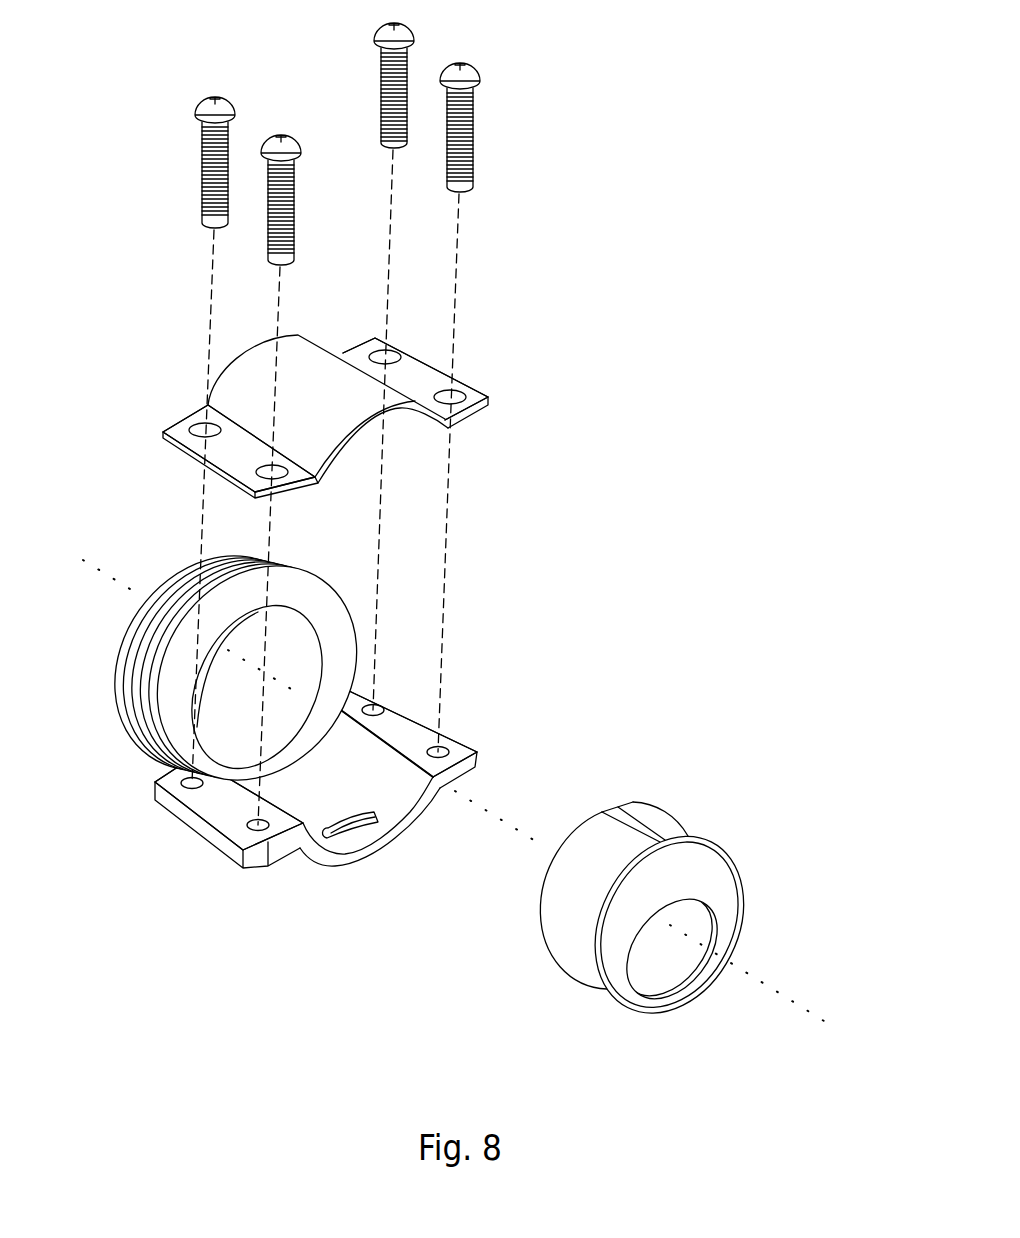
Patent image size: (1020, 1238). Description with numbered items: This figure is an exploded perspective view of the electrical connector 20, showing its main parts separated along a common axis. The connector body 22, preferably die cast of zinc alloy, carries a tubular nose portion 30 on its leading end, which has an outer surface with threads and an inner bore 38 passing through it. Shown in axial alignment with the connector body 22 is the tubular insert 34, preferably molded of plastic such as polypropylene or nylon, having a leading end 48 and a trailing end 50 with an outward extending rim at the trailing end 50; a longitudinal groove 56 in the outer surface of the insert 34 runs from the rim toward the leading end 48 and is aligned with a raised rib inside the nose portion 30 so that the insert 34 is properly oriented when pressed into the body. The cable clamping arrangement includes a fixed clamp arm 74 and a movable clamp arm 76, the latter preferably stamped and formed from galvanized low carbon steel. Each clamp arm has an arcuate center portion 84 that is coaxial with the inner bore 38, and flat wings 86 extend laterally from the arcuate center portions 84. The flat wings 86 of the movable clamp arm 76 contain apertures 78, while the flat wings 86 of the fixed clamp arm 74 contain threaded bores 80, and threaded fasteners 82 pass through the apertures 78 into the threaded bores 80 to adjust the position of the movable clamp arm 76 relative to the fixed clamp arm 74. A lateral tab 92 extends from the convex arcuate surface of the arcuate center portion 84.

The electrical connector 20 is at (720, 447).
The connector body 22 is at (228, 648).
The tubular nose portion 30 is at (177, 582).
The tubular insert 34 is at (662, 881).
The inner bore 38 is at (287, 667).
The leading end 48 is at (600, 870).
The trailing end 50 is at (727, 887).
The longitudinal groove 56 is at (647, 827).
The fixed clamp arm 74 is at (393, 782).
The movable clamp arm 76 is at (409, 379).
The apertures 78 is at (392, 351).
The threaded bores 80 is at (380, 700).
The threaded fasteners 82 is at (473, 118).
The arcuate center portion 84 is at (387, 417).
The flat wings 86 is at (428, 373).
The lateral tab 92 is at (346, 832).